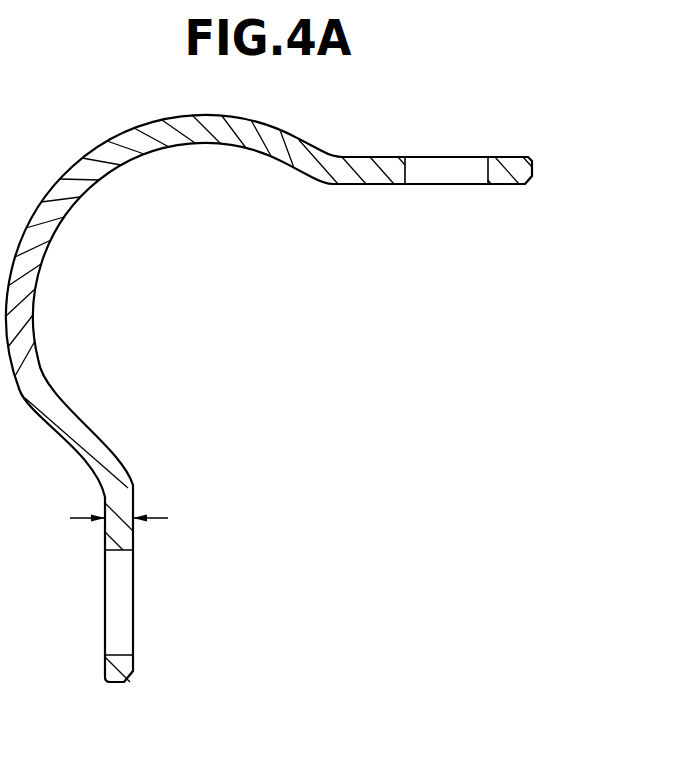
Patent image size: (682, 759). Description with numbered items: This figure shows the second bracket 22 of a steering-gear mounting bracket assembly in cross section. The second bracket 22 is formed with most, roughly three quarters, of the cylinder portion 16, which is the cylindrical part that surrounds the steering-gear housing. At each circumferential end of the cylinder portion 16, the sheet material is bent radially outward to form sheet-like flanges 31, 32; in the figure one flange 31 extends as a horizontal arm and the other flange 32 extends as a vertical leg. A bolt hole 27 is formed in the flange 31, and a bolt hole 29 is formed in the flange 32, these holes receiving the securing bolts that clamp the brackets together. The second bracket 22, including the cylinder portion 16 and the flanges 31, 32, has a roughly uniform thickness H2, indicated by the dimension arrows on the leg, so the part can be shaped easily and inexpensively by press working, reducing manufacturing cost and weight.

The cylinder portion 16 is at (47, 194).
The second bracket 22 is at (283, 116).
The flange 31 is at (508, 165).
The bolt hole 27 is at (485, 178).
The flange 32 is at (110, 533).
The bolt hole 29 is at (108, 648).
The thickness H2 is at (130, 514).